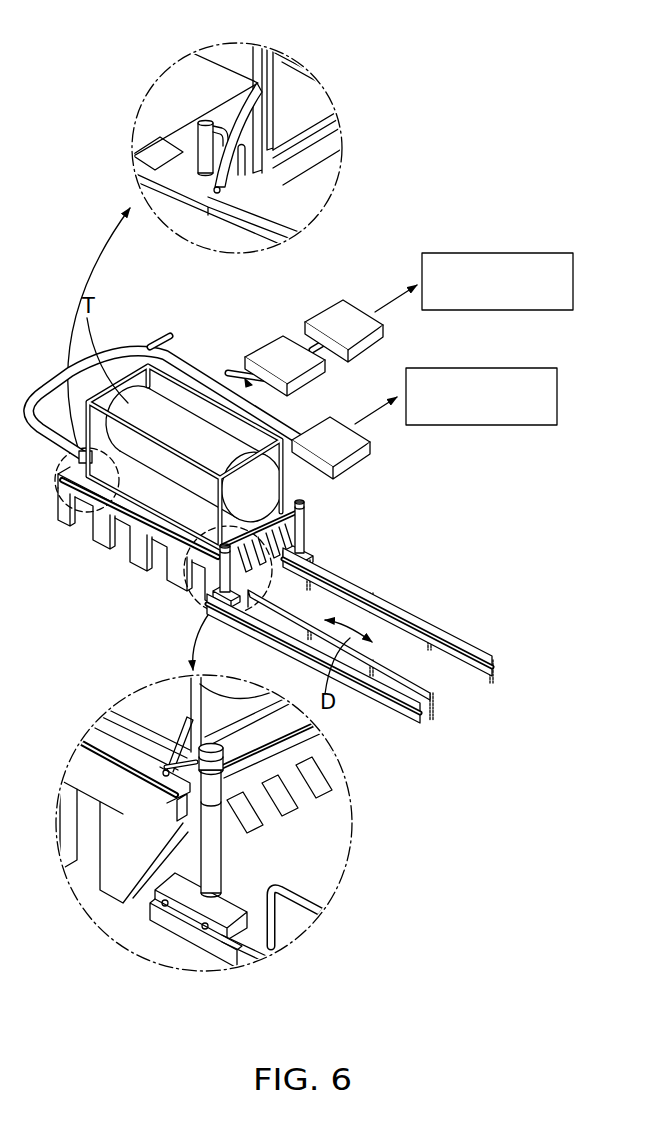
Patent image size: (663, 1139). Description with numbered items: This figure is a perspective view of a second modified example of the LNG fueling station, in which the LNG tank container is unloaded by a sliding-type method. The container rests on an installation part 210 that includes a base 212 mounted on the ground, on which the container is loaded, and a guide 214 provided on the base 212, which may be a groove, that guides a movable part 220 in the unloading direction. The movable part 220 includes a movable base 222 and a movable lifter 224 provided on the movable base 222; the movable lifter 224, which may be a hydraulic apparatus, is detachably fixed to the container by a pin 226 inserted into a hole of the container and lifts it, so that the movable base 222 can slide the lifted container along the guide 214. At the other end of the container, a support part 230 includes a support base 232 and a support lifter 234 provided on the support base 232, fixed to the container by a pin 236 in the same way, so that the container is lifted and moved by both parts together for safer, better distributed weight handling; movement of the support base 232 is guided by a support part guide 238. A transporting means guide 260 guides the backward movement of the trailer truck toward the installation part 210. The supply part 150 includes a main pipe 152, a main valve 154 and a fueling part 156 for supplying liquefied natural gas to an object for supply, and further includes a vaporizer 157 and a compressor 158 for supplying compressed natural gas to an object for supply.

The supply part 150 is at (301, 400).
The main pipe 152 is at (192, 366).
The main valve 154 is at (167, 335).
The fueling part 156 is at (366, 453).
The vaporizer 157 is at (277, 348).
The compressor 158 is at (335, 318).
The installation part 210 is at (172, 559).
The base 212 is at (118, 538).
The guide 214 is at (88, 517).
The movable part 220 is at (236, 133).
The movable base 222 is at (170, 173).
The movable lifter 224 is at (200, 120).
The pin 226 is at (298, 112).
The support part 230 is at (230, 819).
The support base 232 is at (237, 903).
The support lifter 234 is at (217, 818).
The pin 236 is at (150, 732).
The support part guide 238 is at (393, 714).
The transporting means guide 260 is at (433, 702).